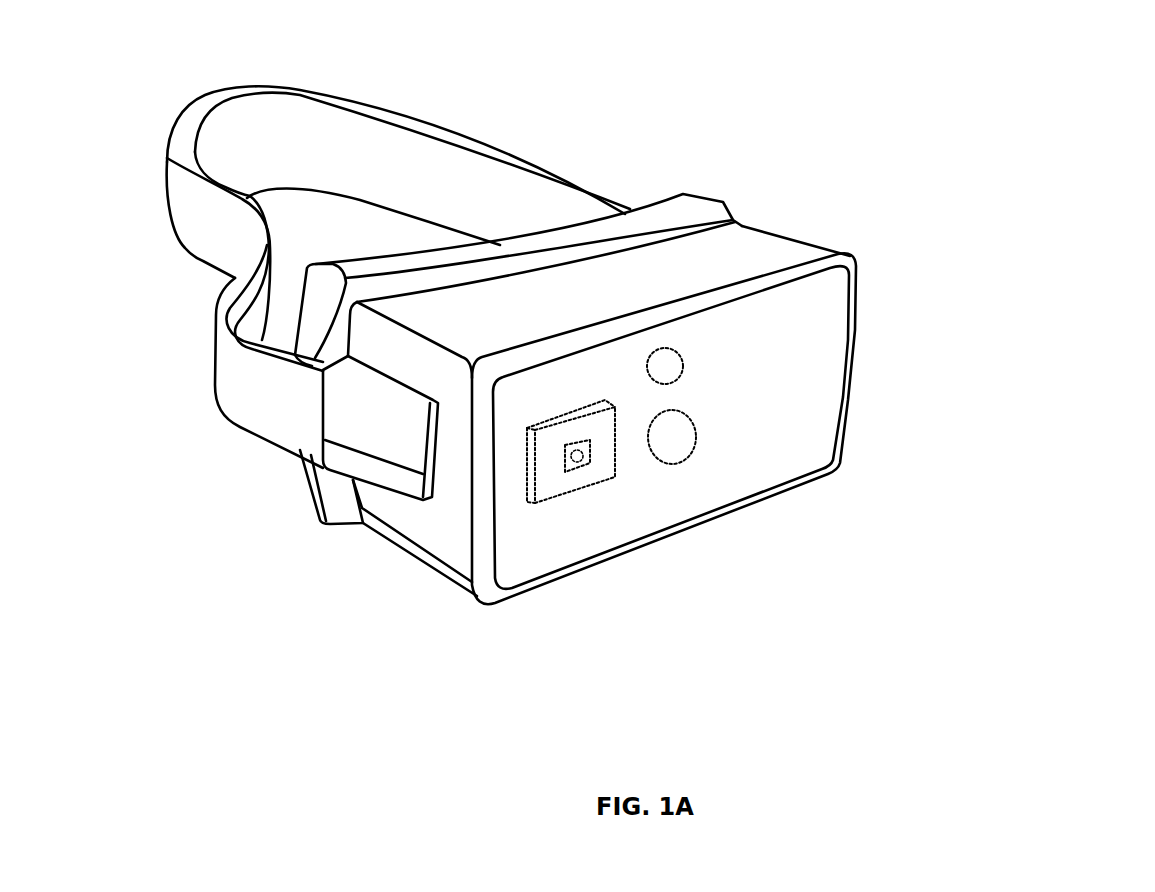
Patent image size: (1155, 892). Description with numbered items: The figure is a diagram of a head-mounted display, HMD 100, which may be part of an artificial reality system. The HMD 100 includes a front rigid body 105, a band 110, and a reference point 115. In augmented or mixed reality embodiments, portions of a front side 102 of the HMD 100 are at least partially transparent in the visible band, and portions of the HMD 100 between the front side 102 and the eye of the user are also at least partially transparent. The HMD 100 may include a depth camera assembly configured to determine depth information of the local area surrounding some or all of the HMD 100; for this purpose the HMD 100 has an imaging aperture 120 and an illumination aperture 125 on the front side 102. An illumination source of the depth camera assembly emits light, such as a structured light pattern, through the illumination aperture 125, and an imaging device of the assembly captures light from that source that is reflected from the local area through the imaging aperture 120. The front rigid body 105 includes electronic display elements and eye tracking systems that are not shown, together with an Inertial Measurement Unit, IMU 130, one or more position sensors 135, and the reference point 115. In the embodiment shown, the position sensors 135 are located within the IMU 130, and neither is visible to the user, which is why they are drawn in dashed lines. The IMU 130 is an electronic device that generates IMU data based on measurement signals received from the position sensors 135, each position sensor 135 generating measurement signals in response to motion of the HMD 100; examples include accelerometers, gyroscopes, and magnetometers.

The head-mounted display (HMD) 100 is at (1078, 62).
The front side 102 is at (767, 410).
The front rigid body 105 is at (726, 442).
The band 110 is at (517, 157).
The reference point 115 is at (580, 467).
The imaging aperture 120 is at (697, 437).
The illumination aperture 125 is at (680, 357).
The Inertial Measurement Unit (IMU) 130 is at (615, 467).
The position sensors 135 is at (565, 473).